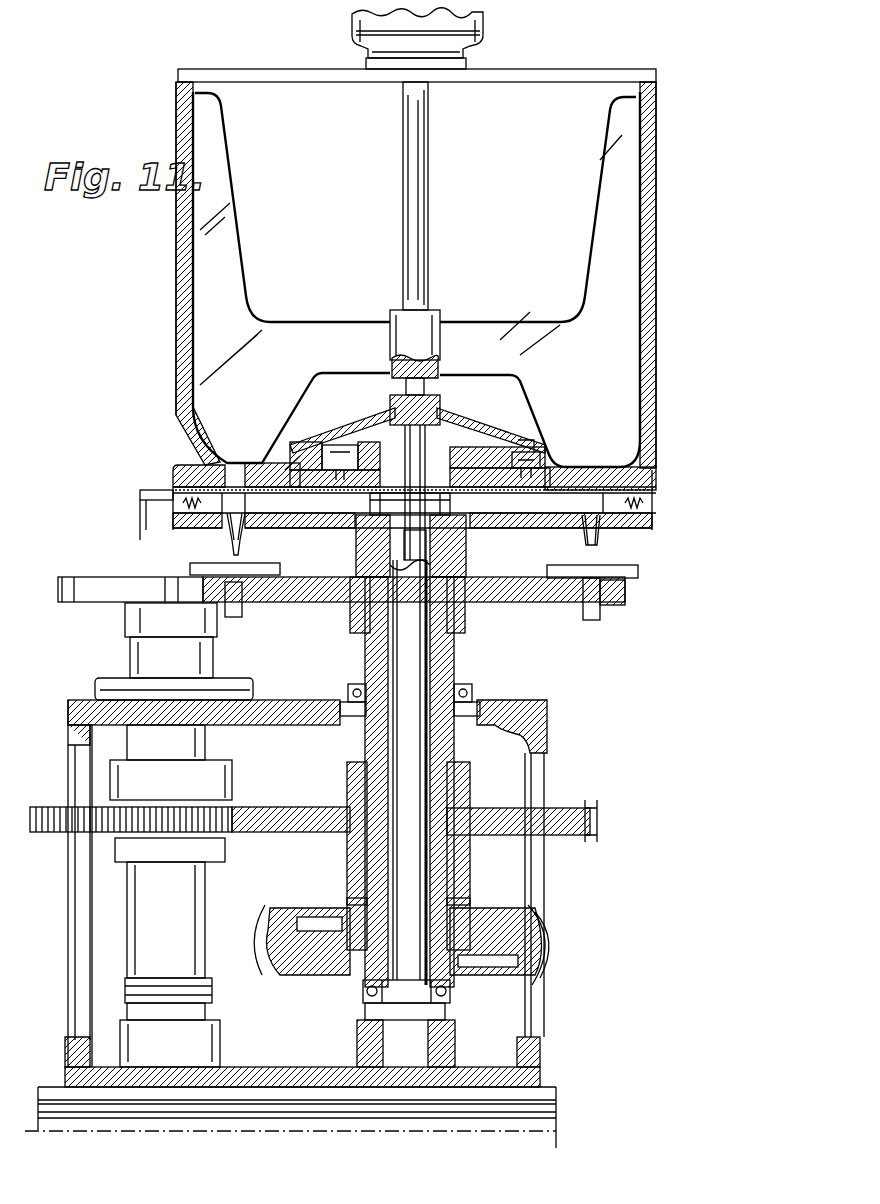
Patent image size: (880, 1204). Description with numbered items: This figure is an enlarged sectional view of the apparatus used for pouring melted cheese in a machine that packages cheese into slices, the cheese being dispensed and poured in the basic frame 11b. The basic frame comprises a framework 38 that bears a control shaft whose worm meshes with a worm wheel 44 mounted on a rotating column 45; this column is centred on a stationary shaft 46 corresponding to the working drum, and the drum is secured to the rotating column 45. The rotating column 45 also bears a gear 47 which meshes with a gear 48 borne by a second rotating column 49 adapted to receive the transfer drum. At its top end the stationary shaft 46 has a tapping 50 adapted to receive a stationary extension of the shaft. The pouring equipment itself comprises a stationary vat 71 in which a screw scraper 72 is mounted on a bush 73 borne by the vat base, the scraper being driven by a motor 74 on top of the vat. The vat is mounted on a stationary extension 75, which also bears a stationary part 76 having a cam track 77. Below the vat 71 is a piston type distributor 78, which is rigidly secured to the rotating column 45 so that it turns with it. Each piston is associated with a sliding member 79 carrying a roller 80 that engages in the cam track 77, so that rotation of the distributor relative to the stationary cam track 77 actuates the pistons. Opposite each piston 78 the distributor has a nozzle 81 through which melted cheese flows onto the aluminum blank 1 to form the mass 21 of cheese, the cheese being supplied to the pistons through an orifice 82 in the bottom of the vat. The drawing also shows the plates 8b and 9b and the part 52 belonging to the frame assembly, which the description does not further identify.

The aluminum blank 1 is at (200, 560).
The plate 8b is at (556, 600).
The table 9b is at (92, 600).
The basic frame 11b is at (92, 337).
The mass 21 is at (245, 562).
The framework 38 is at (547, 724).
The worm wheel 44 is at (545, 920).
The rotating column 45 is at (492, 706).
The stationary shaft 46 is at (410, 645).
The gear 47 is at (575, 806).
The gear 48 is at (44, 807).
The rotating column 49 is at (205, 746).
The tapping 50 is at (433, 558).
The bracket 52 is at (615, 605).
The stationary vat 71 is at (178, 130).
The screw scraper 72 is at (222, 178).
The bush 73 is at (440, 322).
The motor 74 is at (484, 33).
The stationary extension 75 is at (440, 428).
The stationary part 76 is at (306, 442).
The cam track 77 is at (528, 450).
The piston type distributor 78 is at (312, 505).
The sliding member 79 is at (300, 457).
The roller 80 is at (510, 474).
The nozzle 81 is at (150, 500).
The orifice 82 is at (196, 462).